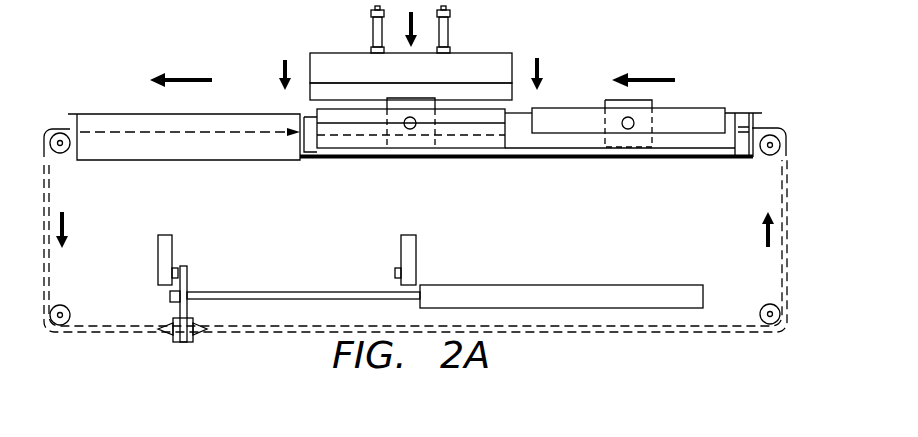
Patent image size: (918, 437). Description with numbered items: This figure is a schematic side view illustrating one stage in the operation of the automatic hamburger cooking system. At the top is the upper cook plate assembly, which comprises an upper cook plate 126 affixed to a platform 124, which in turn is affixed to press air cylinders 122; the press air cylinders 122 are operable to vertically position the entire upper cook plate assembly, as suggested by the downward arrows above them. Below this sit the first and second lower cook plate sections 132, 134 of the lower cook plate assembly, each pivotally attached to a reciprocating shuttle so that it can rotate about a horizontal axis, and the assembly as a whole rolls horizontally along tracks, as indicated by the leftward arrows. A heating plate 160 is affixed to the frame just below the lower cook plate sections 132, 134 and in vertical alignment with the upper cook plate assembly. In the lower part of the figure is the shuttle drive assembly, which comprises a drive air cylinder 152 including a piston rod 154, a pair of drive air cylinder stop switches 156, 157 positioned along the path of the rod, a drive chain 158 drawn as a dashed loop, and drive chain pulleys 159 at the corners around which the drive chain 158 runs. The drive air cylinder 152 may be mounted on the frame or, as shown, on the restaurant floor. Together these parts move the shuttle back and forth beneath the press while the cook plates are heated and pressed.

The press air cylinders 122 is at (371, 33).
The platform 124 is at (514, 62).
The upper cook plate 126 is at (308, 90).
The first lower cook plate section 132 is at (705, 108).
The second lower cook plate section 134 is at (370, 115).
The heating plate 160 is at (483, 143).
The drive air cylinder 152 is at (595, 285).
The piston rod 154 is at (300, 292).
The drive air cylinder stop switch 156 is at (157, 262).
The drive air cylinder stop switch 157 is at (416, 258).
The drive chain 158 is at (790, 268).
The drive chain pulleys 159 is at (765, 157).